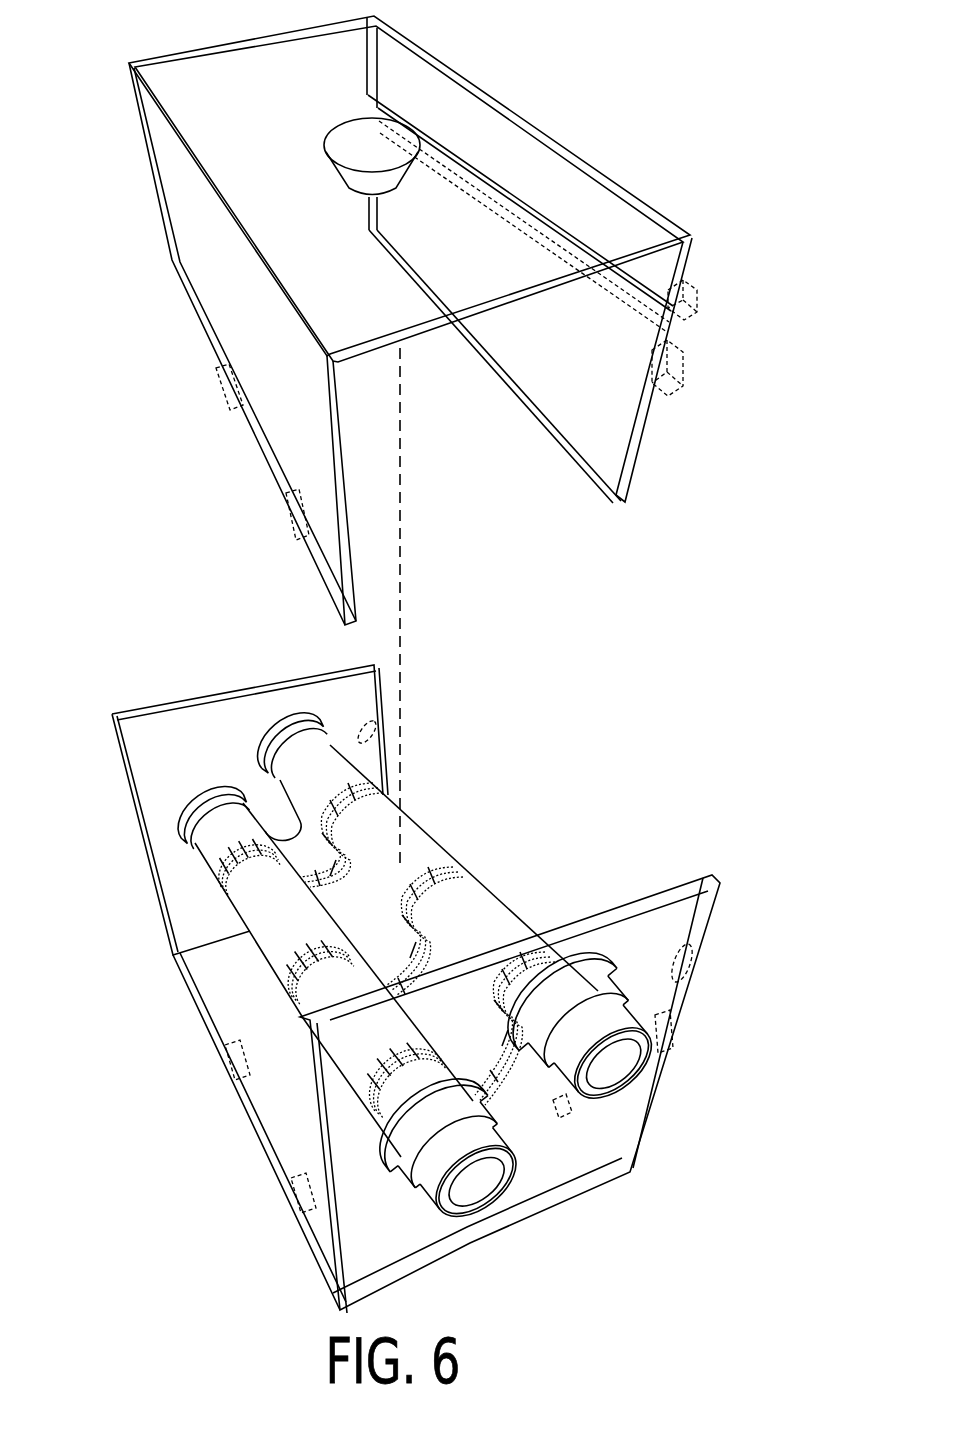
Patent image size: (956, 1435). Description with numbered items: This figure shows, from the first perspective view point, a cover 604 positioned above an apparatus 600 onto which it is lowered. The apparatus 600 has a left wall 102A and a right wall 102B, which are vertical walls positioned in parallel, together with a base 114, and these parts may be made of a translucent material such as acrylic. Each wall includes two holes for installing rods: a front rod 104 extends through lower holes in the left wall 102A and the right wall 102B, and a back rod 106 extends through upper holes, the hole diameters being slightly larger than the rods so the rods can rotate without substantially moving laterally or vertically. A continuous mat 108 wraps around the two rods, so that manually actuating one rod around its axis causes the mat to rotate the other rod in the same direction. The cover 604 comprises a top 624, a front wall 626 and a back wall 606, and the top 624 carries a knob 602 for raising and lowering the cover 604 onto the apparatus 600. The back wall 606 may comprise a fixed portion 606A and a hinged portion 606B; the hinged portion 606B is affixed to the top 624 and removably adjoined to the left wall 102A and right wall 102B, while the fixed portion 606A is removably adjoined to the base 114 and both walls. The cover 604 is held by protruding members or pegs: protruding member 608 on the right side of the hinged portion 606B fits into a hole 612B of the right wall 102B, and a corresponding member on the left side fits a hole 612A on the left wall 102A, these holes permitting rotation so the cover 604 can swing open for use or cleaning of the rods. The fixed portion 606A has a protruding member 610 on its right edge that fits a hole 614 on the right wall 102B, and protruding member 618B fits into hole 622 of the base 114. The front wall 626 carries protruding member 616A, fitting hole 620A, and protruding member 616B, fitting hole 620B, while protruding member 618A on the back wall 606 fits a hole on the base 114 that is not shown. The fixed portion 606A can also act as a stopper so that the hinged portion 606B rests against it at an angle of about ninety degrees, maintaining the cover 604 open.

The apparatus 600 is at (567, 777).
The cover 604 is at (551, 51).
The top 624 is at (266, 66).
The knob 602 is at (333, 163).
The front wall 626 is at (194, 258).
The back wall 606 is at (594, 217).
The fixed portion 606A is at (632, 468).
The hinged portion 606B is at (692, 262).
The protruding member 608 is at (688, 306).
The protruding member 610 is at (670, 390).
The protruding member 616A is at (220, 386).
The protruding member 616B is at (290, 527).
The protruding member 618A is at (450, 337).
The protruding member 618B is at (471, 341).
The left wall 102A is at (123, 766).
The right wall 102B is at (710, 882).
The base 114 is at (188, 992).
The front rod 104 is at (490, 1197).
The back rod 106 is at (630, 1078).
The continuous mat 108 is at (513, 1097).
The hole 612A is at (376, 728).
The hole 612B is at (687, 965).
The hole 614 is at (667, 1038).
The hole 620A is at (240, 1058).
The hole 620B is at (306, 1193).
The hole 622 is at (558, 1107).